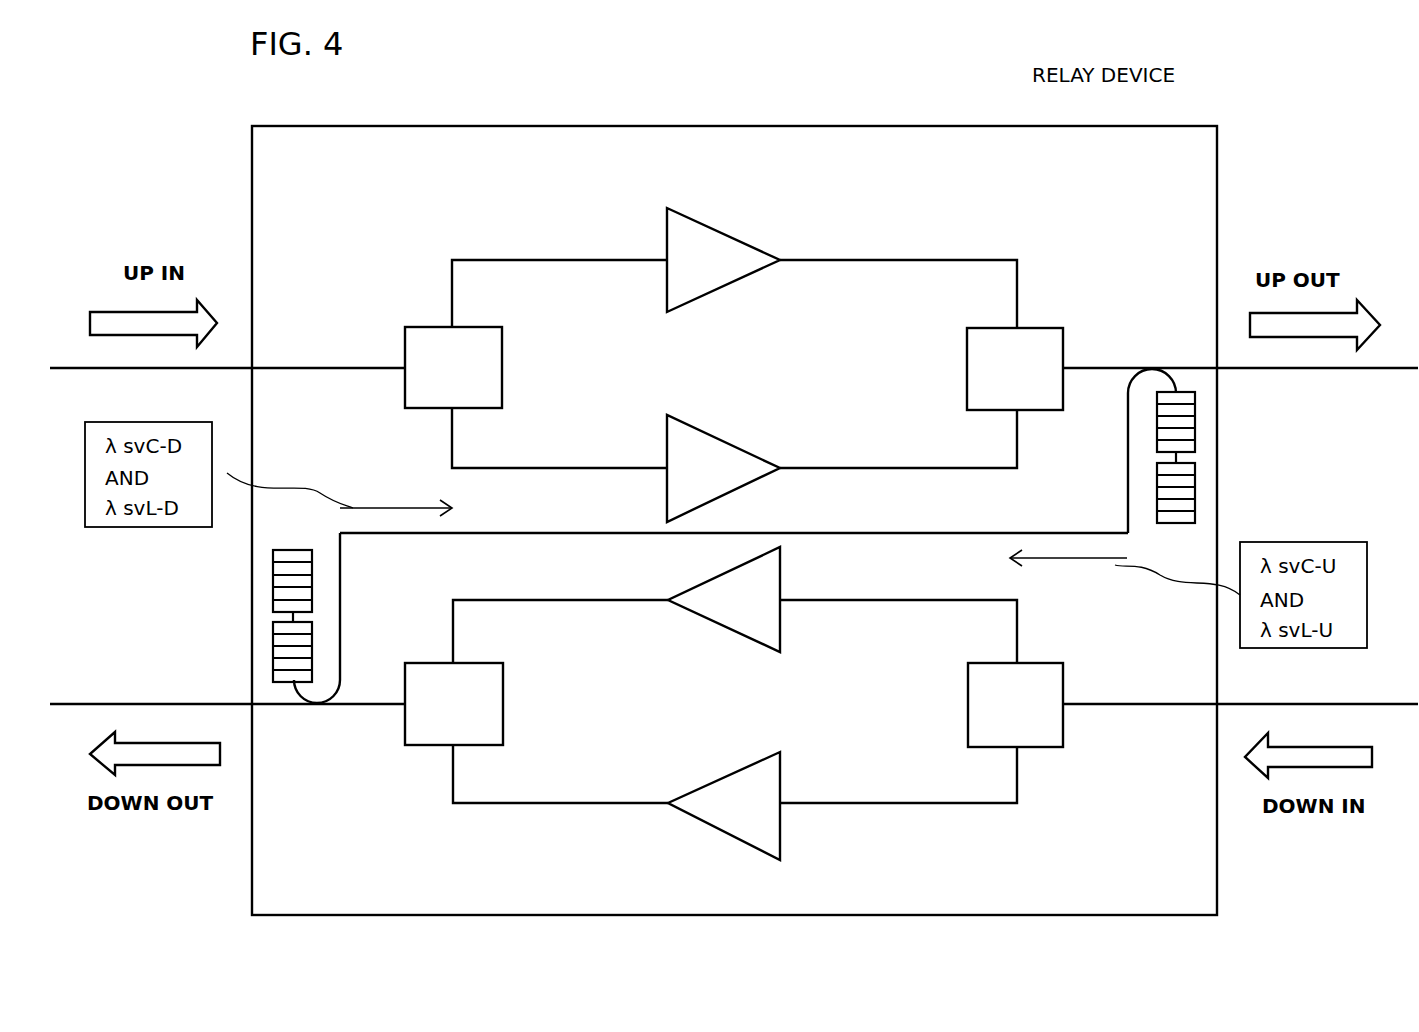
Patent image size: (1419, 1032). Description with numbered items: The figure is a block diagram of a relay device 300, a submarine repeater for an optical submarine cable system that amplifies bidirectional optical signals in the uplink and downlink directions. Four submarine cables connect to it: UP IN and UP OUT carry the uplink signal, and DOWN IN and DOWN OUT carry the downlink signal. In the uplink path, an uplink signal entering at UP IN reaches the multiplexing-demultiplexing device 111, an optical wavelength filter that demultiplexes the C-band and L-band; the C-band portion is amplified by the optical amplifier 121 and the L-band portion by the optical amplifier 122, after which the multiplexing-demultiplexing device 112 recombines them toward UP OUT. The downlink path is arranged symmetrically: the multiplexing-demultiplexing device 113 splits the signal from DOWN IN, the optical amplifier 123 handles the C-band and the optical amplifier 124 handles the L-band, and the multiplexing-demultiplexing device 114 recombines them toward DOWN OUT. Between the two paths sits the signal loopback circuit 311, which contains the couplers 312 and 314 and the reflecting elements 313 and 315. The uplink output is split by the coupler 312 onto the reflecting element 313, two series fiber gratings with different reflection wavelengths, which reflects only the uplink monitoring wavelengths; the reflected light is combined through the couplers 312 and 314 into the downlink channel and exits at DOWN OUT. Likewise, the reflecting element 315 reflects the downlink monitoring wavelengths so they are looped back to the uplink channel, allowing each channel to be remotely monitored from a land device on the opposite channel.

The relay device 300 is at (960, 126).
The multiplexing-demultiplexing device 111 is at (425, 327).
The multiplexing-demultiplexing device 112 is at (1040, 328).
The multiplexing-demultiplexing device 113 is at (1042, 663).
The multiplexing-demultiplexing device 114 is at (430, 663).
The optical amplifier 121 is at (710, 228).
The optical amplifier 122 is at (725, 442).
The optical amplifier 123 is at (720, 624).
The optical amplifier 124 is at (720, 827).
The signal loopback circuit 311 is at (820, 533).
The coupler 312 is at (1150, 368).
The reflecting element 313 is at (1197, 460).
The coupler 314 is at (330, 705).
The reflecting element 315 is at (263, 613).